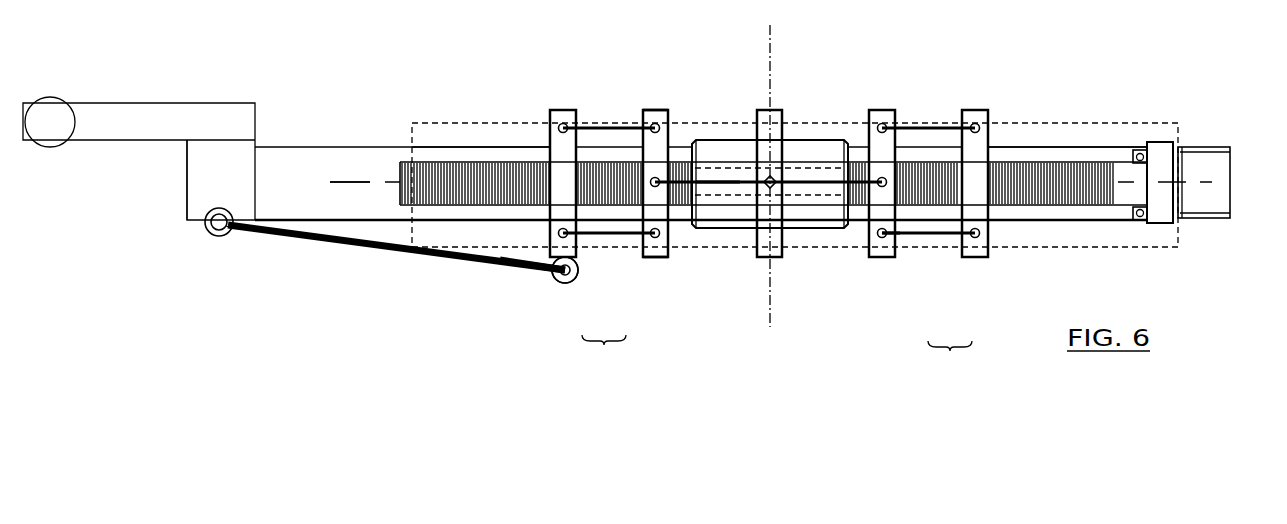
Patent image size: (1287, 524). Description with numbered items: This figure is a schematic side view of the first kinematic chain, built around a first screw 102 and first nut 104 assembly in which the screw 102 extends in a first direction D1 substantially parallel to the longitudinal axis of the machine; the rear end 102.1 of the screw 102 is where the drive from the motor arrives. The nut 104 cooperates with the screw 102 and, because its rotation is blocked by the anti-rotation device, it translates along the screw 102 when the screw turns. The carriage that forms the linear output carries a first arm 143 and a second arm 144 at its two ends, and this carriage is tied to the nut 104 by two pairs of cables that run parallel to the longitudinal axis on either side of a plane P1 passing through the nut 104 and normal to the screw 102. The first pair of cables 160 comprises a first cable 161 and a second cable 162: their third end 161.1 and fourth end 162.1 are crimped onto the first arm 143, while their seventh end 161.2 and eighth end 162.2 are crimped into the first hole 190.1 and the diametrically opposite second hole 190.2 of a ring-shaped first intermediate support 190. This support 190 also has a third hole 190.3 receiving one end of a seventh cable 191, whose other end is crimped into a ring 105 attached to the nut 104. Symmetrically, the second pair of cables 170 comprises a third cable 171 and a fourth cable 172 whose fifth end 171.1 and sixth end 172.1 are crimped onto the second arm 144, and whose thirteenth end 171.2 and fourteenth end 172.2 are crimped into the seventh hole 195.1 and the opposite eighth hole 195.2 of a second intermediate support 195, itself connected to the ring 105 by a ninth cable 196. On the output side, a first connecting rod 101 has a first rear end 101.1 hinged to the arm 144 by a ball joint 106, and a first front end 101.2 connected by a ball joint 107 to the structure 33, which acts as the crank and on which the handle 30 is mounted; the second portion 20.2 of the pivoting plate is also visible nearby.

The handle 30 is at (50, 147).
The structure 33 is at (184, 179).
The ball joint 107 is at (208, 232).
The first front end 101.2 is at (235, 235).
The second portion 20.2 is at (329, 202).
The first connecting rod 101 is at (357, 253).
The ball joint 106 is at (528, 268).
The first rear end 101.1 is at (558, 259).
The fifth end 171.1 is at (567, 280).
The first screw 102 is at (400, 160).
The second arm 144 is at (550, 160).
The fourth cable 172 is at (580, 112).
The sixth end 172.1 is at (548, 124).
The fourteenth end 172.2 is at (651, 122).
The second intermediate support 195 is at (652, 110).
The eighth hole 195.2 is at (663, 115).
The seventh hole 195.1 is at (657, 258).
The third cable 171 is at (592, 238).
The thirteenth end 171.2 is at (640, 252).
The second pair of cables 170 is at (603, 352).
The first nut 104 is at (720, 229).
The ninth cable 196 is at (712, 181).
The seventh cable 191 is at (818, 186).
The ring 105 is at (756, 110).
The section plane P1 is at (771, 62).
The first intermediate support 190 is at (882, 109).
The second hole 190.2 is at (880, 122).
The third hole 190.3 is at (875, 180).
The first hole 190.1 is at (879, 238).
The eighth end 162.2 is at (905, 125).
The second cable 162 is at (924, 125).
The fourth end 162.1 is at (990, 115).
The first arm 143 is at (980, 176).
The first cable 161 is at (940, 236).
The seventh end 161.2 is at (884, 238).
The third end 161.1 is at (974, 238).
The first pair of cables 160 is at (950, 359).
The rear end 102.1 is at (1143, 180).
The first direction D1 is at (1200, 188).